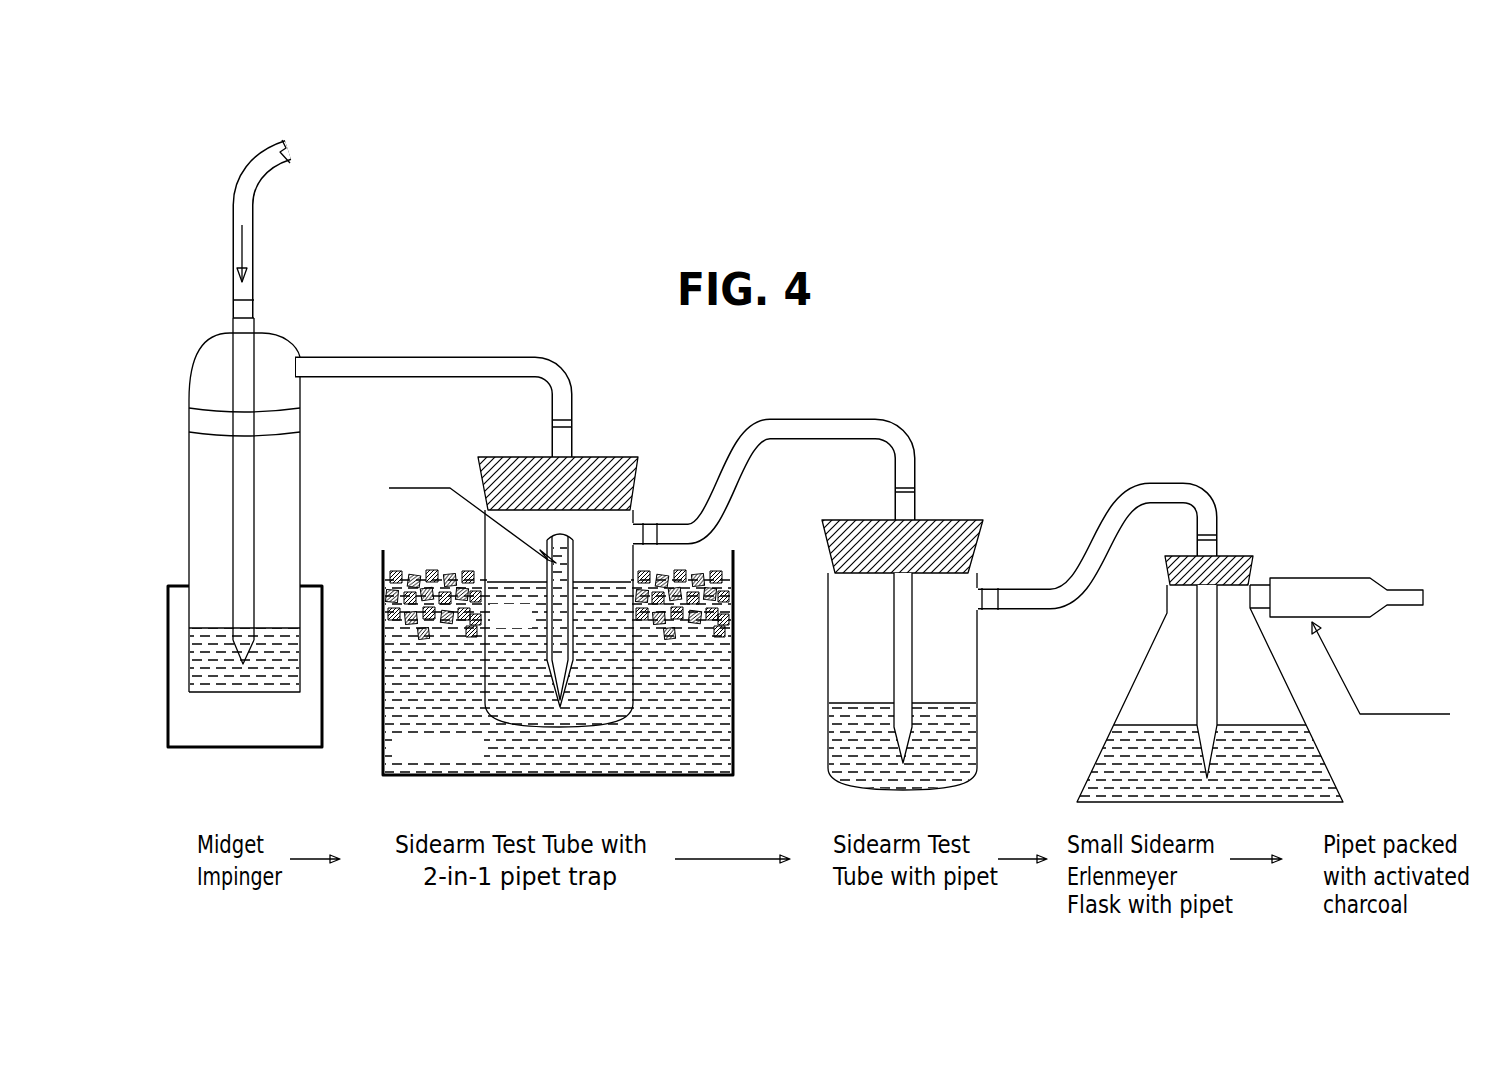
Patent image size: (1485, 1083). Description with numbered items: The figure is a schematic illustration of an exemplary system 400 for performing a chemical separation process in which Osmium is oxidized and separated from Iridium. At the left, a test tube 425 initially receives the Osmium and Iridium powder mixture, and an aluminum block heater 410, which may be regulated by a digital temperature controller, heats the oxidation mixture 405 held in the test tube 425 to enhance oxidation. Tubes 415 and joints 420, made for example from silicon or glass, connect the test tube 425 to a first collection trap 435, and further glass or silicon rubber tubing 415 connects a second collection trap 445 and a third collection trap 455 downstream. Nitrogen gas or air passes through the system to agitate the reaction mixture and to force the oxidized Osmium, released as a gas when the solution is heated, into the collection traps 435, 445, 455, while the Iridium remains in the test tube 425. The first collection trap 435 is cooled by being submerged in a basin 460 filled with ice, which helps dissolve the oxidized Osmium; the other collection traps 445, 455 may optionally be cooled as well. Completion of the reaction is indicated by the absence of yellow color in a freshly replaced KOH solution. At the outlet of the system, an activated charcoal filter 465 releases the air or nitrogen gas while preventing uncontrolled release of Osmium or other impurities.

The system 400 is at (1140, 282).
The oxidation mixture 405 is at (203, 664).
The aluminum block heater 410 is at (190, 722).
The tubes 415 is at (240, 178).
The joints 420 is at (282, 352).
The test tube 425 is at (203, 502).
The first collection trap 435 is at (502, 563).
The second collection trap 445 is at (965, 650).
The third collection trap 455 is at (1158, 655).
The basin 460 is at (398, 769).
The activated charcoal filter 465 is at (1330, 577).